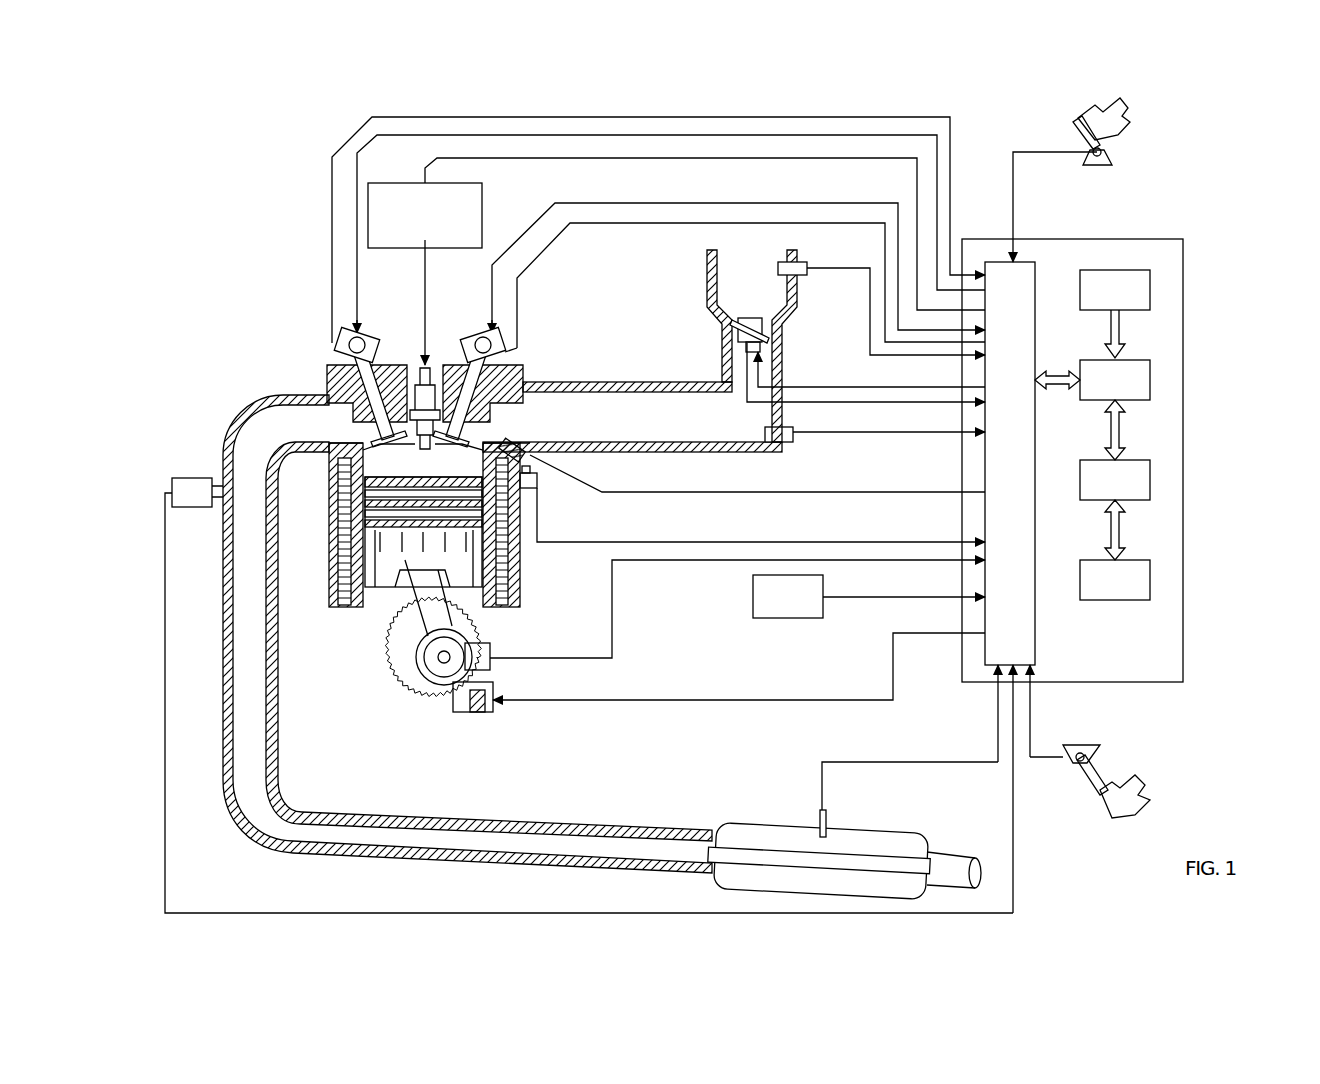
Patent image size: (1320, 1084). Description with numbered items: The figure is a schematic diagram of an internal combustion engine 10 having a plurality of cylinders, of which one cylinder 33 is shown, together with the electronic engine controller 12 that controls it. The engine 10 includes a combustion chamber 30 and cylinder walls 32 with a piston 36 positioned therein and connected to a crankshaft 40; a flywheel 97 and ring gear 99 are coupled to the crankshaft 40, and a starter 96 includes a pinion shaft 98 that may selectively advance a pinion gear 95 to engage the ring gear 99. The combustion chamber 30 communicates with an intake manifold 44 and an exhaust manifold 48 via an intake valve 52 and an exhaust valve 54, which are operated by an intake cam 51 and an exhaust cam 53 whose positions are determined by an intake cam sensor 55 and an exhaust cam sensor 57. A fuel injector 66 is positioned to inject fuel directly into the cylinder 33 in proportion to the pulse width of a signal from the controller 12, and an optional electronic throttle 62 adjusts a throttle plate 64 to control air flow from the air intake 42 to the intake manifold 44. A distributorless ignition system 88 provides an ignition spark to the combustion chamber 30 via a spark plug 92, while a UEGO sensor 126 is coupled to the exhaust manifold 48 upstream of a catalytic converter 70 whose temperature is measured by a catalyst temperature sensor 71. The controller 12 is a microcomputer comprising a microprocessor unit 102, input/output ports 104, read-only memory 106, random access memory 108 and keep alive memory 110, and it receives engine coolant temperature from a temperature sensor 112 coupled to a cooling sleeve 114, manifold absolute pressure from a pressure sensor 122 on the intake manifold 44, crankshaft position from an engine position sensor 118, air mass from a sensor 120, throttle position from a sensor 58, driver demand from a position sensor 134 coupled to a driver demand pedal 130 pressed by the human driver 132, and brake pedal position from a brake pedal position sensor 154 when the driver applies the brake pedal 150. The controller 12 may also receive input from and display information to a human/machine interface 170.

The engine 10 is at (262, 318).
The electronic engine controller 12 is at (1183, 239).
The combustion chamber 30 is at (422, 460).
The cylinder walls 32 is at (358, 605).
The cylinder 33 is at (397, 593).
The piston 36 is at (412, 600).
The crankshaft 40 is at (432, 680).
The air intake 42 is at (752, 346).
The intake manifold 44 is at (632, 417).
The exhaust manifold 48 is at (467, 634).
The intake cam 51 is at (480, 335).
The intake valve 52 is at (470, 440).
The exhaust cam 53 is at (355, 333).
The exhaust valve 54 is at (372, 442).
The intake cam sensor 55 is at (500, 352).
The exhaust cam sensor 57 is at (340, 352).
The throttle position sensor 58 is at (745, 350).
The electronic throttle 62 is at (770, 332).
The throttle plate 64 is at (738, 325).
The fuel injector 66 is at (527, 470).
The catalytic converter 70 is at (730, 825).
The catalyst temperature sensor 71 is at (830, 812).
The distributorless ignition system 88 is at (376, 183).
The spark plug 92 is at (430, 375).
The pinion gear 95 is at (480, 715).
The starter 96 is at (493, 710).
The flywheel 97 is at (418, 662).
The pinion shaft 98 is at (465, 705).
The ring gear 99 is at (437, 695).
The microprocessor unit 102 is at (1150, 380).
The input/output ports 104 is at (1035, 270).
The read-only memory 106 is at (1150, 290).
The random access memory 108 is at (1150, 480).
The keep alive memory 110 is at (1150, 580).
The temperature sensor 112 is at (537, 488).
The cooling sleeve 114 is at (520, 565).
The engine position sensor 118 is at (490, 650).
The air mass sensor 120 is at (800, 262).
The pressure sensor 122 is at (790, 443).
The Universal Exhaust Gas Oxygen (UEGO) sensor 126 is at (172, 479).
The driver demand pedal 130 is at (1075, 130).
The human driver 132 is at (1130, 115).
The position sensor 134 is at (1110, 152).
The brake pedal 150 is at (1100, 800).
The brake pedal position sensor 154 is at (1070, 750).
The human/machine interface 170 is at (788, 596).